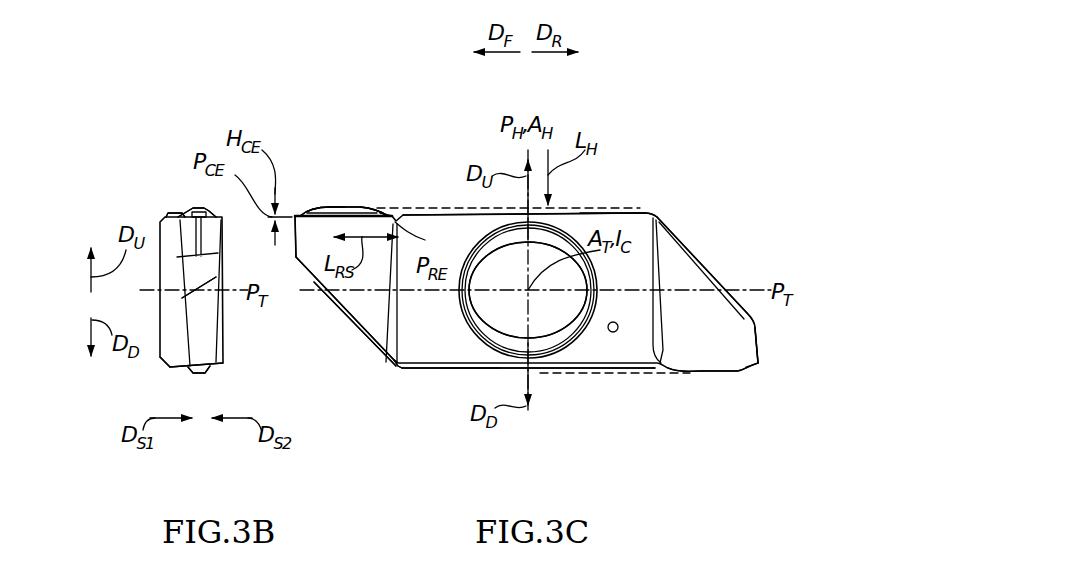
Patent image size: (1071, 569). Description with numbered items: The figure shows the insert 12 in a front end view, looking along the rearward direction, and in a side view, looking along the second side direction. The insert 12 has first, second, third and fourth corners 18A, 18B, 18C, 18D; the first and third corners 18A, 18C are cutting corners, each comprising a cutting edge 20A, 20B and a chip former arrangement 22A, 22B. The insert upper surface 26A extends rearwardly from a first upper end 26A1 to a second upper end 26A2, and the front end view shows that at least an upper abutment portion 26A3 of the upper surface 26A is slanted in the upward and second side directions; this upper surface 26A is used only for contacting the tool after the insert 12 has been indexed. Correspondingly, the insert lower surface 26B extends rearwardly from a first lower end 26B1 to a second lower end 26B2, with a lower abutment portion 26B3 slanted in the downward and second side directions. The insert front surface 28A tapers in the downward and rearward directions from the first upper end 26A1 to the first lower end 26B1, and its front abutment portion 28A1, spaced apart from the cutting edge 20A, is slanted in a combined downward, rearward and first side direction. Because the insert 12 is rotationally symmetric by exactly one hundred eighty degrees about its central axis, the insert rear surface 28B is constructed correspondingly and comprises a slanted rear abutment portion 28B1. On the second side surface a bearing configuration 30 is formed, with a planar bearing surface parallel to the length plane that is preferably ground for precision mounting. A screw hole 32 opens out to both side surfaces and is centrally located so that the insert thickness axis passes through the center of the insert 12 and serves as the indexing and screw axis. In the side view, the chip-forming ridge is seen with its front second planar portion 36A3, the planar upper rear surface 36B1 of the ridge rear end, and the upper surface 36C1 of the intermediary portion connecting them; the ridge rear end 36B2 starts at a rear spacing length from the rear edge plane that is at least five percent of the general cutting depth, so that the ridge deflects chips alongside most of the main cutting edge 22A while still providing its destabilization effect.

In FIG. 3B, the insert 12 is at (138, 182).
In FIG. 3C, the insert 12 is at (662, 82).
In FIG. 3C, the first corner 18A is at (290, 213).
In FIG. 3C, the second corner 18B is at (727, 190).
In FIG. 3C, the third corner 18C is at (757, 378).
In FIG. 3C, the fourth corner 18D is at (378, 403).
In FIG. 3C, the cutting edge 20A is at (316, 153).
In FIG. 3C, the cutting edge 20B is at (801, 340).
In FIG. 3C, the chip former arrangement 22A is at (352, 207).
In FIG. 3C, the chip former arrangement 22B is at (717, 380).
In FIG. 3B, the insert upper surface 26A is at (197, 210).
In FIG. 3C, the insert upper surface 26A is at (447, 178).
In FIG. 3C, the first upper end 26A1 is at (297, 212).
In FIG. 3C, the second upper end 26A2 is at (660, 205).
In FIG. 3B, the upper abutment portion 26A3 is at (165, 214).
In FIG. 3C, the upper abutment portion 26A3 is at (602, 207).
In FIG. 3B, the insert lower surface 26B is at (168, 372).
In FIG. 3C, the insert lower surface 26B is at (463, 373).
In FIG. 3C, the first lower end 26B1 is at (396, 371).
In FIG. 3C, the second lower end 26B2 is at (810, 335).
In FIG. 3B, the lower abutment portion 26B3 is at (180, 372).
In FIG. 3C, the lower abutment portion 26B3 is at (470, 372).
In FIG. 3C, the insert front surface 28A is at (314, 297).
In FIG. 3B, the front abutment portion 28A1 is at (200, 333).
In FIG. 3C, the front abutment portion 28A1 is at (352, 322).
In FIG. 3C, the insert rear surface 28B is at (800, 288).
In FIG. 3C, the rear abutment portion 28B1 is at (695, 252).
In FIG. 3B, the bearing configuration 30 is at (152, 360).
In FIG. 3C, the screw hole 32 is at (548, 248).
In FIG. 3C, the front second planar portion 36A3 is at (313, 208).
In FIG. 3C, the upper rear surface 36B1 is at (371, 211).
In FIG. 3C, the ridge rear end 36B2 is at (358, 206).
In FIG. 3C, the upper surface of the intermediary portion 36C1 is at (337, 207).